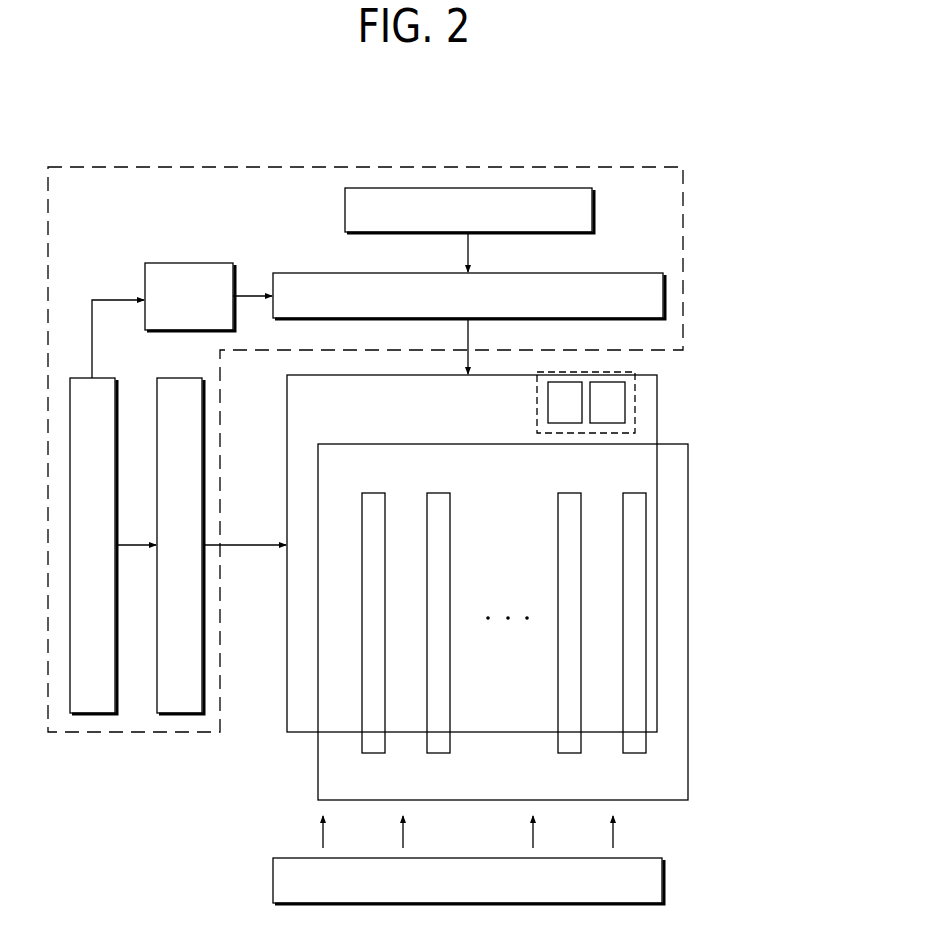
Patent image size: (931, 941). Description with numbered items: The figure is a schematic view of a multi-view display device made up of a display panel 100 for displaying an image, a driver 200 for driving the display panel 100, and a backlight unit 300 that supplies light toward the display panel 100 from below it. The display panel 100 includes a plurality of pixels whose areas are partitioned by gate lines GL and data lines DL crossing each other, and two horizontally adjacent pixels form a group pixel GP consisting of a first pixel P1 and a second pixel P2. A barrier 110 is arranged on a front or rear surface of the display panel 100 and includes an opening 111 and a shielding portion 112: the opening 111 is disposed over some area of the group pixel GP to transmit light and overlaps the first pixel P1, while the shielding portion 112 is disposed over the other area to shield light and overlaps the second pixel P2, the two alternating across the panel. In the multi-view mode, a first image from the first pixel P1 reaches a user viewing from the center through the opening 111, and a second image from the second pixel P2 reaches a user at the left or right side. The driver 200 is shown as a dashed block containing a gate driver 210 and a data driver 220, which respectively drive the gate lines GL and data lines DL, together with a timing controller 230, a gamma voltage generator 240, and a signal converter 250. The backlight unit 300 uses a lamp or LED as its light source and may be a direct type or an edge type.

The display panel 100 is at (658, 425).
The barrier 110 is at (571, 622).
The opening 111 is at (633, 668).
The shielding portion 112 is at (672, 583).
The driver 200 is at (393, 166).
The gate driver 210 is at (161, 558).
The data driver 220 is at (450, 309).
The timing controller 230 is at (74, 558).
The gamma voltage generator 240 is at (450, 223).
The signal converter 250 is at (171, 310).
The backlight unit 300 is at (450, 893).
The group pixel GP is at (631, 402).
The first pixel P1 is at (565, 402).
The second pixel P2 is at (607, 402).
The data line DL is at (487, 346).
The gate line GL is at (244, 528).